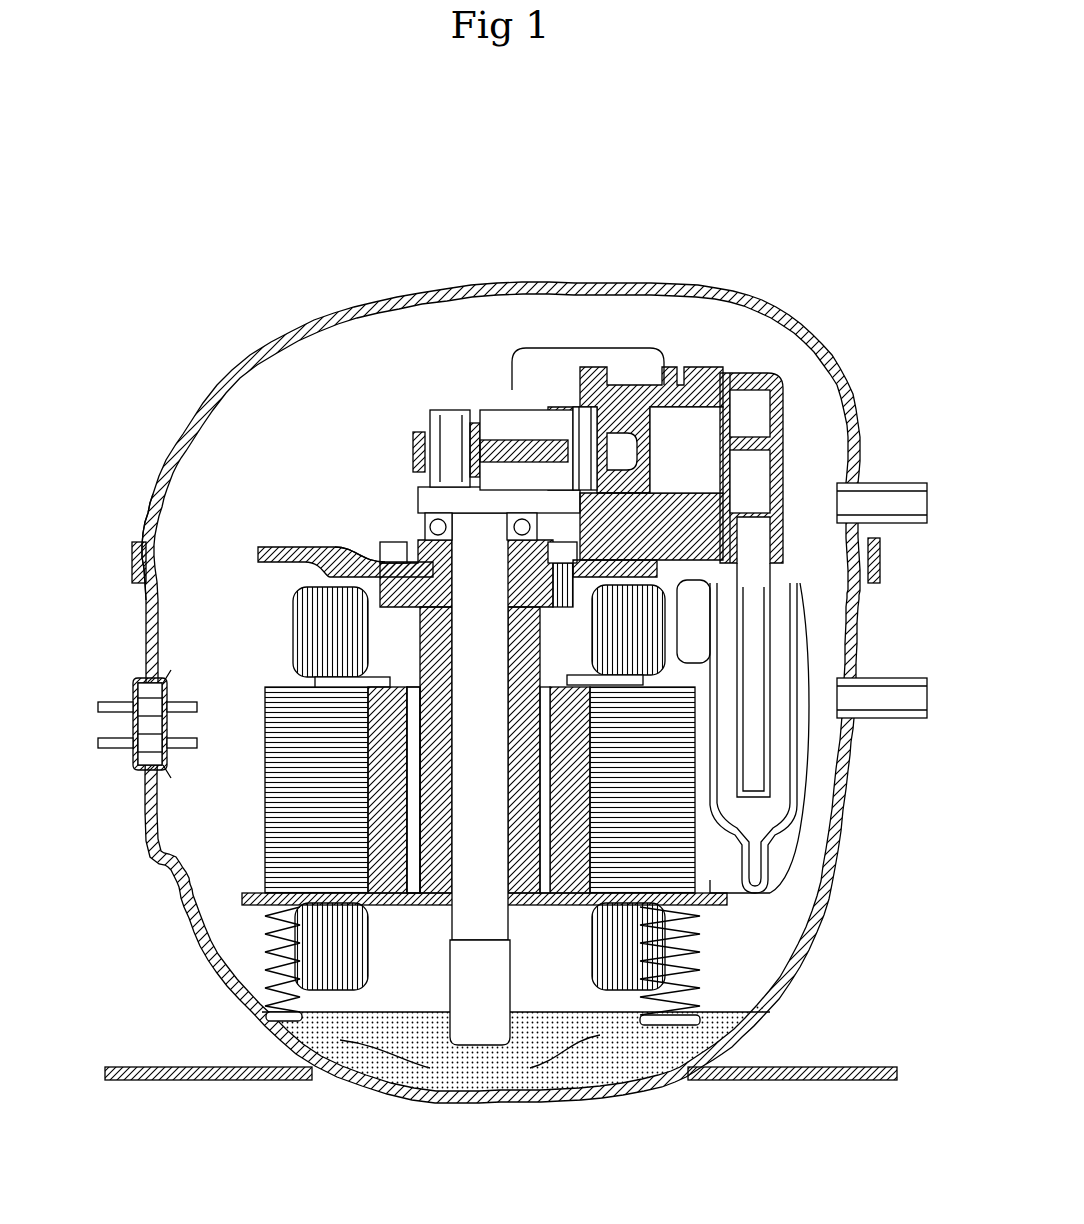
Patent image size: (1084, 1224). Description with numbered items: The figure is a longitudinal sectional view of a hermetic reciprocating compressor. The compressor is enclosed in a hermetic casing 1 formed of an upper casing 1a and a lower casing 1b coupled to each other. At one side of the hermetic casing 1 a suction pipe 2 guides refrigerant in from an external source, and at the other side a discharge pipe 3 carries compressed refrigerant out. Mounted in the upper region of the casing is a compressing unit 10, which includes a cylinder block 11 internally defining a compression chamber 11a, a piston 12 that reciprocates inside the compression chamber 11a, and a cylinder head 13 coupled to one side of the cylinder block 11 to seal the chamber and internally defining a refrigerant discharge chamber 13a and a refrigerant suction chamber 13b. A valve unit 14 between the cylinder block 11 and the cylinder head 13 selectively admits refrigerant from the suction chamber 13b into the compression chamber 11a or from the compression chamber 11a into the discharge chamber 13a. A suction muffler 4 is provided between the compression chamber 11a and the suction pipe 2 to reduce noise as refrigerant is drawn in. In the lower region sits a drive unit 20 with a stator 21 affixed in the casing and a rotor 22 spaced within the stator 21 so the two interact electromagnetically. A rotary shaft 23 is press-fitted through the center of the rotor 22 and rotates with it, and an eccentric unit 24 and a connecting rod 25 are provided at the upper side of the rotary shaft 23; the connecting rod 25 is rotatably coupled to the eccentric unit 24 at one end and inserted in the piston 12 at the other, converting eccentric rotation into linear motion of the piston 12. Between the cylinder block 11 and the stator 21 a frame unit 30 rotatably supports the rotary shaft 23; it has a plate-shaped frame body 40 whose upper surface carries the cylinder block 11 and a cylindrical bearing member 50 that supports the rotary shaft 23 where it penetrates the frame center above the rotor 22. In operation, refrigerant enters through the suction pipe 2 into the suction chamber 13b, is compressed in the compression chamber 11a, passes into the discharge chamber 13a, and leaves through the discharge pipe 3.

The hermetic casing 1 is at (55, 513).
The upper casing 1a is at (146, 512).
The lower casing 1b is at (133, 573).
The suction pipe 2 is at (890, 718).
The discharge pipe 3 is at (897, 523).
The suction muffler 4 is at (795, 633).
The compressing unit 10 is at (538, 377).
The cylinder block 11 is at (700, 372).
The compression chamber 11a is at (702, 462).
The piston 12 is at (620, 405).
The cylinder head 13 is at (770, 455).
The refrigerant discharge chamber 13a is at (748, 410).
The refrigerant suction chamber 13b is at (748, 460).
The valve unit 14 is at (725, 380).
The drive unit 20 is at (450, 787).
The stator 21 is at (265, 783).
The rotor 22 is at (374, 819).
The rotary shaft 23 is at (466, 709).
The eccentric unit 24 is at (430, 412).
The connecting rod 25 is at (538, 440).
The frame unit 30 is at (292, 543).
The frame body 40 is at (317, 547).
The bearing member 50 is at (433, 656).